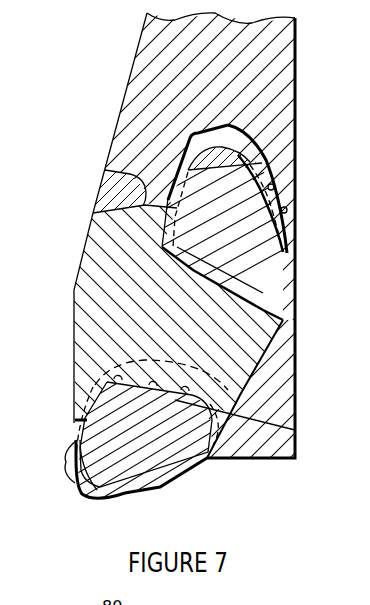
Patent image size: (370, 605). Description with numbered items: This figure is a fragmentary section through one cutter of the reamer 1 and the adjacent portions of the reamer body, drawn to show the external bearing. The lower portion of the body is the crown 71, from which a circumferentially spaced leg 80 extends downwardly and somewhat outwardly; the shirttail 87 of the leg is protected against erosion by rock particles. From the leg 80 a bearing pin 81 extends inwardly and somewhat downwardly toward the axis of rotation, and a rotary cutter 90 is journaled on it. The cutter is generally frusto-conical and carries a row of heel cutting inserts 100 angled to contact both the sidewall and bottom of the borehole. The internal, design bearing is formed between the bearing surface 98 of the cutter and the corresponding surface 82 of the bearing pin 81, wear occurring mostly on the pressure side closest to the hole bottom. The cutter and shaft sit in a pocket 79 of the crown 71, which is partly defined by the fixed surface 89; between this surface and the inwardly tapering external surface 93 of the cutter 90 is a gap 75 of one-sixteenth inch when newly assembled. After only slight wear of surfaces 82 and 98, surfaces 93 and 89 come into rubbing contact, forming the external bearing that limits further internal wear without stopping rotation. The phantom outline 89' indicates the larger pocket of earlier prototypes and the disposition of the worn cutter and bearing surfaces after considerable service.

The crown 71 is at (147, 38).
The reamer 1 is at (70, 80).
The shirttail 87 is at (102, 280).
The leg 80 is at (123, 153).
The pocket 79 is at (239, 147).
The gap 75 is at (271, 168).
The fixed surface of reamer crown 89 is at (247, 203).
The phantom outline of prior pocket surface 89' is at (259, 206).
The bearing pin 81 is at (205, 336).
The external bearing surface of cutter 93 is at (185, 458).
The bearing surface of cutter 98 is at (145, 439).
The bearing pin surface 82 is at (157, 360).
The rotary cutter 90 is at (152, 468).
The cutting inserts 100 is at (78, 485).